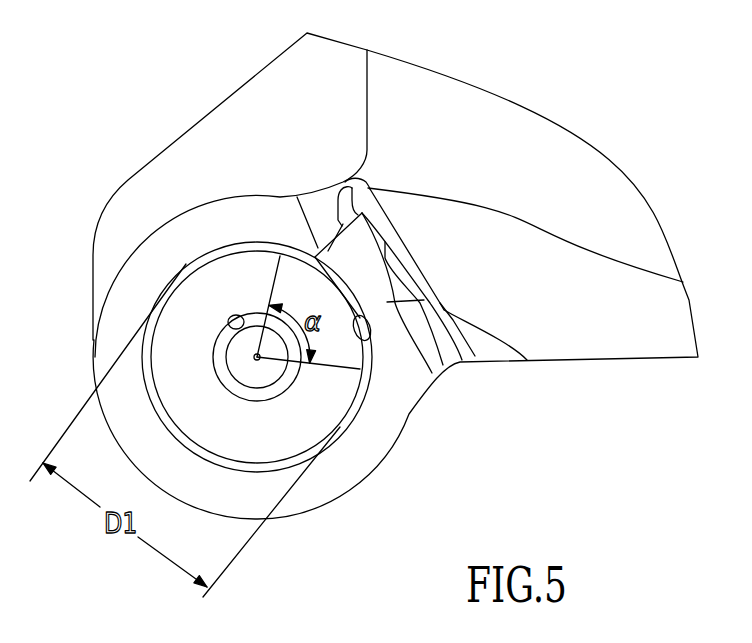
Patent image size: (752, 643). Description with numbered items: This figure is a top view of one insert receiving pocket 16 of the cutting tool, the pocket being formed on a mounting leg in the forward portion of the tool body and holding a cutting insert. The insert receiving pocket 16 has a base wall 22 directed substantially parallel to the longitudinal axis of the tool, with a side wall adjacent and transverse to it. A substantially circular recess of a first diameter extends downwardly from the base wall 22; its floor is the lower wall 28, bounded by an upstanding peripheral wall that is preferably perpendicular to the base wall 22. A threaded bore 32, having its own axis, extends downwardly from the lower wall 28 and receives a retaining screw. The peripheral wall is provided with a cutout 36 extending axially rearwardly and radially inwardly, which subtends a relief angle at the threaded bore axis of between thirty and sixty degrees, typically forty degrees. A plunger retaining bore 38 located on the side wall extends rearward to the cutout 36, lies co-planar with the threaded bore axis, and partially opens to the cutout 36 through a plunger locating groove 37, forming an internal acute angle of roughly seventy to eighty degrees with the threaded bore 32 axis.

The insert receiving pocket 16 is at (517, 478).
The base wall 22 is at (258, 218).
The lower wall 28 is at (198, 305).
The threaded bore 32 is at (252, 315).
The cutout 36 is at (395, 337).
The plunger locating groove 37 is at (445, 372).
The plunger retaining bore 38 is at (527, 360).